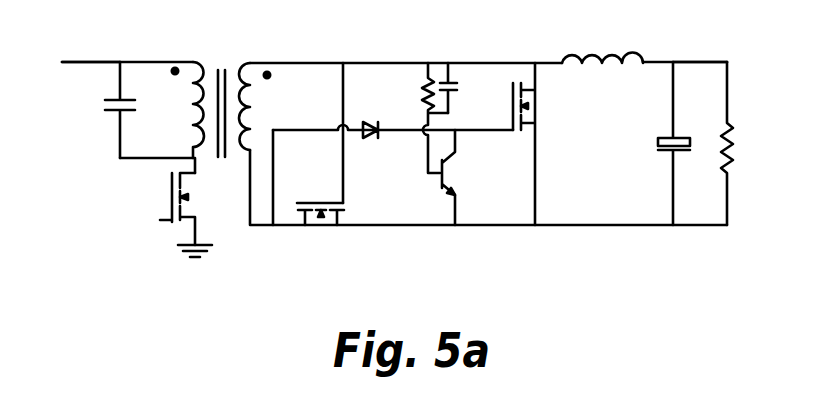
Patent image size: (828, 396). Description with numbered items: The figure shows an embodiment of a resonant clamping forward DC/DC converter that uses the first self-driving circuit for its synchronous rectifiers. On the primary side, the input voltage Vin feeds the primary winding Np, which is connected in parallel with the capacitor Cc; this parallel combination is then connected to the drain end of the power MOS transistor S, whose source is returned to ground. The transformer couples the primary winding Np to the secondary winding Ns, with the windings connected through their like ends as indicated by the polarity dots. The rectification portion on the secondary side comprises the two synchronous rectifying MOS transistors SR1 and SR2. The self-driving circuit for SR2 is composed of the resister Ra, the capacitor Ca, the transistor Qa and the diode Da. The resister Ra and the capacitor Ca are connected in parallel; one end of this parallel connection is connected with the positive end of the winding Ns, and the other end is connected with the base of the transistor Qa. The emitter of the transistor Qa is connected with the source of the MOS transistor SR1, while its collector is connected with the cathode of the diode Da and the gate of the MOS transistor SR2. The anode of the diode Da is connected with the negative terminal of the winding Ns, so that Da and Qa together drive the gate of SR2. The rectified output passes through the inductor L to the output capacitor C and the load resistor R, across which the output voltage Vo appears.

The input voltage Vin is at (91, 40).
The capacitor Cc is at (97, 110).
The winding Np is at (186, 110).
The power MOS transistor S is at (193, 215).
The winding Ns is at (266, 106).
The synchronous rectifying MOS transistor SR1 is at (327, 236).
The diode Da is at (381, 150).
The resister Ra is at (416, 118).
The capacitor Ca is at (470, 88).
The transistor Qa is at (474, 177).
The synchronous rectifying MOS transistor SR2 is at (561, 144).
The output inductor L is at (602, 33).
The output voltage Vo is at (712, 39).
The output capacitor C is at (660, 143).
The load resistor R is at (743, 143).